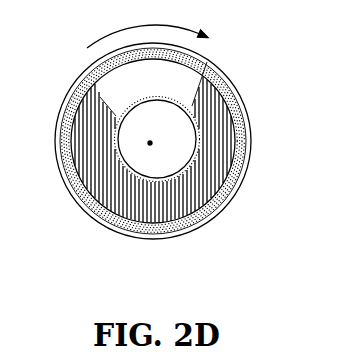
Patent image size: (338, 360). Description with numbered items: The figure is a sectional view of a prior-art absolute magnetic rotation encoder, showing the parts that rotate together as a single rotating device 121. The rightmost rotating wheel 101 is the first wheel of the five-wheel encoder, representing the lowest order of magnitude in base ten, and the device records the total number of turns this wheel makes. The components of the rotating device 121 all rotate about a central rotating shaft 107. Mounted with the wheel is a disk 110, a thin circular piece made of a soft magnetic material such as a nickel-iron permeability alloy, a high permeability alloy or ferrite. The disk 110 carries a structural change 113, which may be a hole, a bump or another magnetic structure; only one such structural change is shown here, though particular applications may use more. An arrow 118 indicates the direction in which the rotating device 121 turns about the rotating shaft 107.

The rightmost rotating wheel 101 is at (226, 76).
The rotating shaft 107 is at (150, 143).
The disk 110 is at (235, 98).
The structural change 113 is at (182, 101).
The rotation direction arrow 118 is at (222, 36).
The rotating device 121 is at (179, 155).